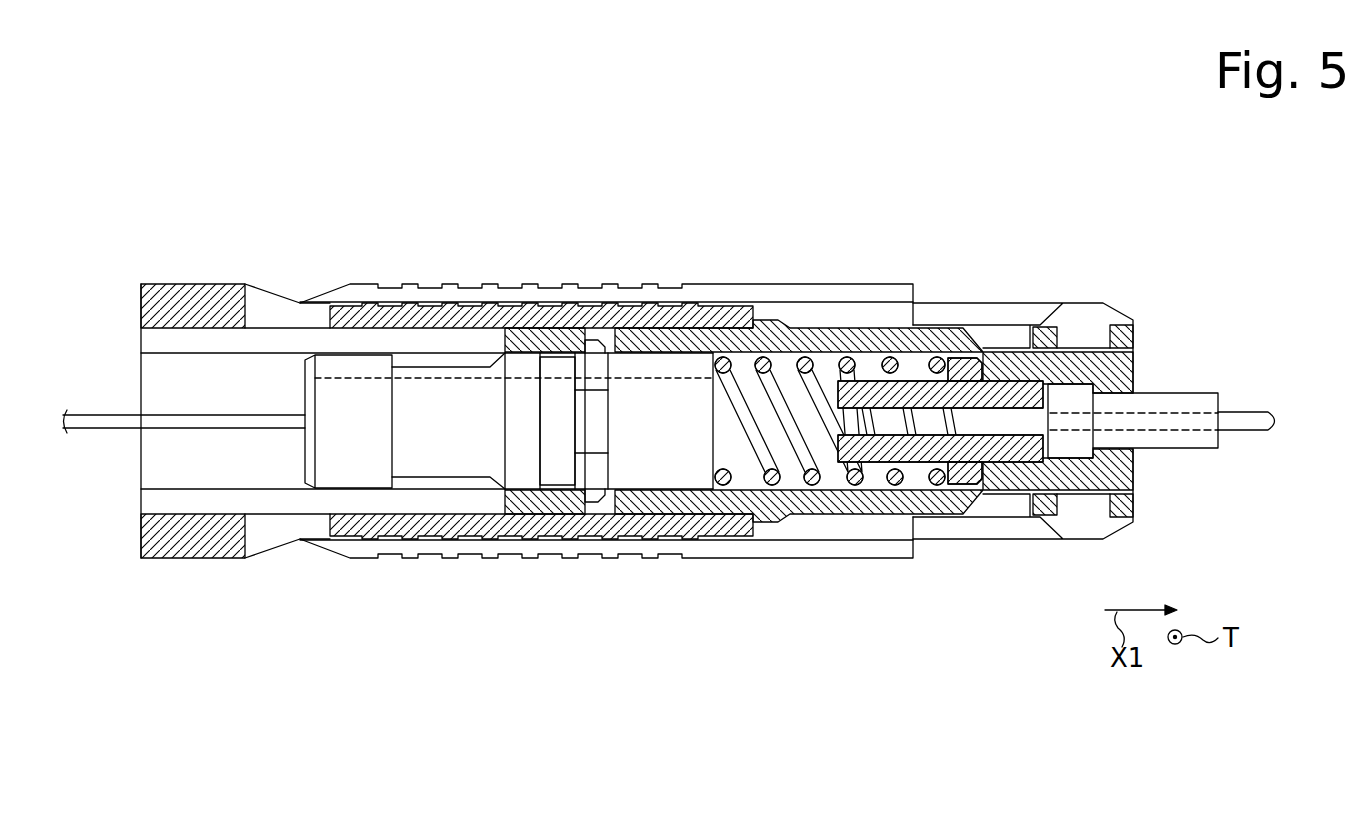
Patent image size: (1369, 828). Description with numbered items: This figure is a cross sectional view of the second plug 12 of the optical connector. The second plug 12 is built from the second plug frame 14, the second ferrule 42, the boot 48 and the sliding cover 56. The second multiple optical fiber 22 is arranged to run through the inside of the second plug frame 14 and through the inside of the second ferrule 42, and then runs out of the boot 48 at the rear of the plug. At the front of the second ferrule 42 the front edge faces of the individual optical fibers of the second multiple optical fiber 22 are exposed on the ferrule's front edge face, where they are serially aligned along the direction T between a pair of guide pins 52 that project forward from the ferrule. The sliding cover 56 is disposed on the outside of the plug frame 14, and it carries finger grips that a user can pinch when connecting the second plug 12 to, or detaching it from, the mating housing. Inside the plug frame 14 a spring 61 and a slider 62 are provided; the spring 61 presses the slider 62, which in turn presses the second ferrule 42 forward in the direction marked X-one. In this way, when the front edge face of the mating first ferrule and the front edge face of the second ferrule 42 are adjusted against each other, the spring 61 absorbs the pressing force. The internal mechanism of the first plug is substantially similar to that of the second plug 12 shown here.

The second plug 12 is at (945, 238).
The second plug frame 14 is at (1133, 365).
The second multiple optical fiber 22 is at (95, 424).
The second ferrule 42 is at (1175, 438).
The boot 48 is at (432, 452).
The guide pins 52 is at (1268, 421).
The sliding cover 56 is at (555, 308).
The spring 61 is at (722, 440).
The slider 62 is at (883, 432).